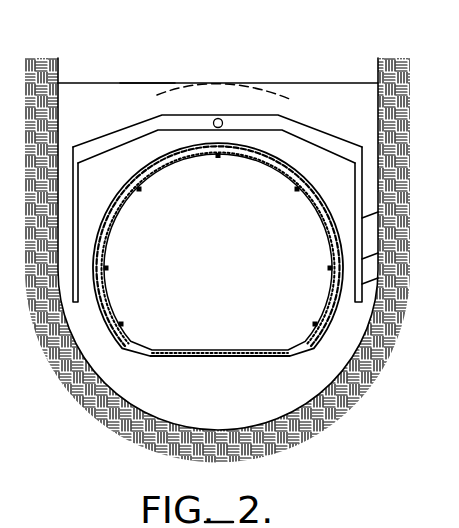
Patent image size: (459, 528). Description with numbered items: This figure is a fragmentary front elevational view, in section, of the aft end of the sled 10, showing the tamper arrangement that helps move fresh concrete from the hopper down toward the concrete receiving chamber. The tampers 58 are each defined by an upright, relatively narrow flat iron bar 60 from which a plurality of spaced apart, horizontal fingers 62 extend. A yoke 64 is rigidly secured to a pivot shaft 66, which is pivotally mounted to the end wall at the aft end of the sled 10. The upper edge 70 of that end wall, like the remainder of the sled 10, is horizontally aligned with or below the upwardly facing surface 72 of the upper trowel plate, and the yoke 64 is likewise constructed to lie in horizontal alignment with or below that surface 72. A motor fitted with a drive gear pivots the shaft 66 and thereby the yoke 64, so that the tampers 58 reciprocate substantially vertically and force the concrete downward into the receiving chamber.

The sled 10 is at (85, 82).
The tampers 58 is at (72, 251).
The flat iron bar 60 is at (372, 287).
The horizontal fingers 62 is at (382, 221).
The yoke 64 is at (288, 128).
The pivot shaft 66 is at (218, 118).
The upper edge 70 is at (147, 82).
The upwardly facing surface 72 is at (208, 82).